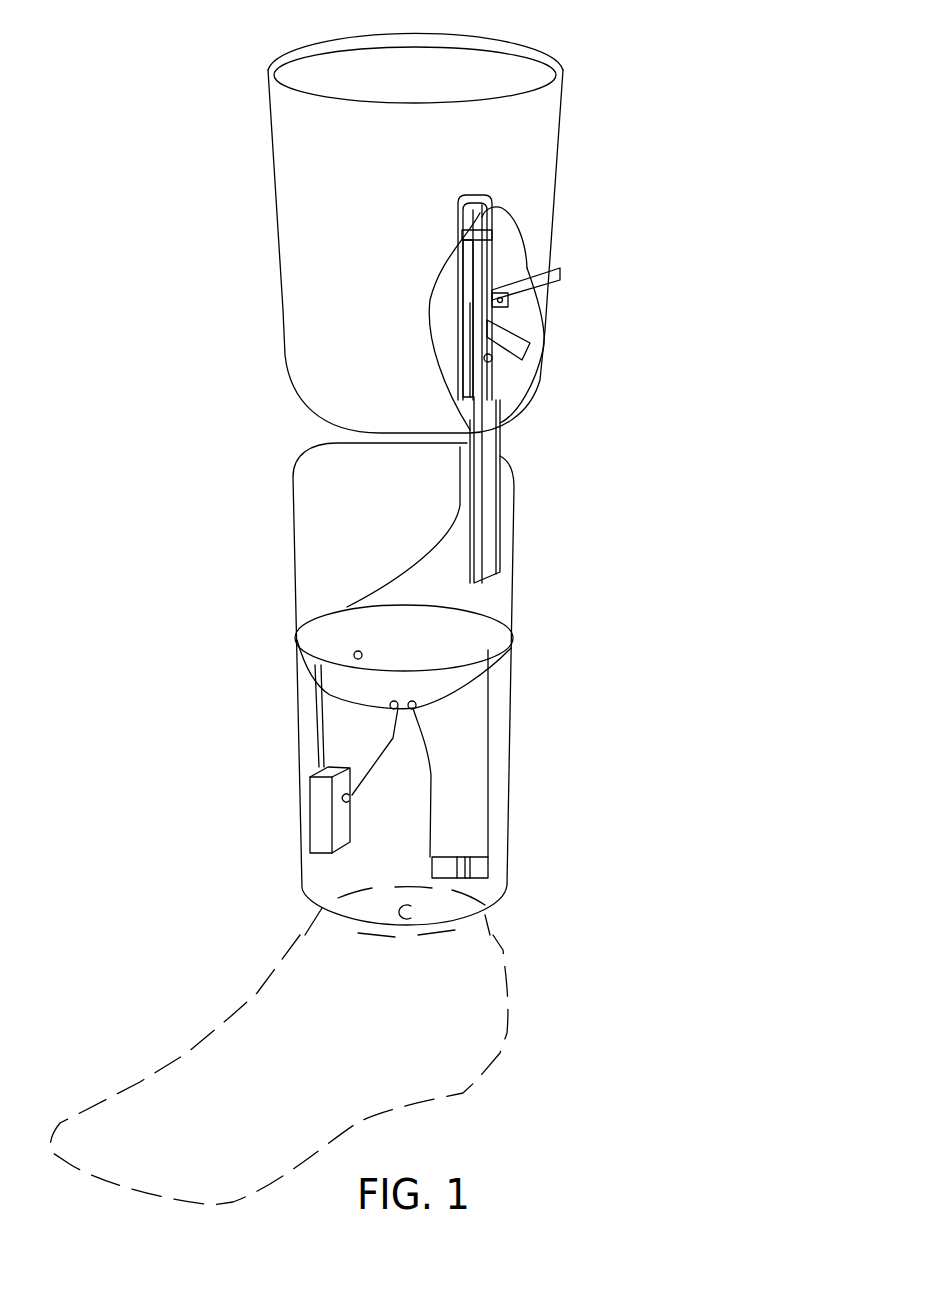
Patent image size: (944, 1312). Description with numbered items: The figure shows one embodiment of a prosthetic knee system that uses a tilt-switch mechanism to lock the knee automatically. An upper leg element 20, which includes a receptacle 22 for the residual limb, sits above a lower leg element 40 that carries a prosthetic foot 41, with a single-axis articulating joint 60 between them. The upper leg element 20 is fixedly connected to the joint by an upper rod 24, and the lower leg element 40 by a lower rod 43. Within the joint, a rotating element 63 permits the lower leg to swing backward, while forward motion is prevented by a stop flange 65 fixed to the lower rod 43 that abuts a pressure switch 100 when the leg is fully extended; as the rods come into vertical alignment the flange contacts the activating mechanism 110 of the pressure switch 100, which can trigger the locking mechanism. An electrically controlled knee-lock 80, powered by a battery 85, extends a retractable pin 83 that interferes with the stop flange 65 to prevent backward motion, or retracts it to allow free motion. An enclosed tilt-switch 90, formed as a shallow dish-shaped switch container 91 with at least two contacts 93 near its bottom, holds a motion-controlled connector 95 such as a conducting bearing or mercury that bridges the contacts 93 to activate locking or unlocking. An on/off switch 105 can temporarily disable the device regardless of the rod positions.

The upper leg element 20 is at (672, 105).
The receptacle 22 is at (442, 50).
The upper rod 24 is at (480, 212).
The knee-lock 80 is at (483, 253).
The pressure switch 100 is at (548, 268).
The activating mechanism 110 is at (508, 300).
The single-axis articulating joint 60 is at (610, 313).
The stop flange 65 is at (528, 322).
The rotating element 63 is at (503, 357).
The retractable pin 83 is at (470, 303).
The lower rod 43 is at (487, 492).
The lower leg element 40 is at (594, 1067).
The tilt-switch 90 is at (513, 605).
The switch container 91 is at (467, 676).
The contacts 93 is at (330, 683).
The motion-controlled connector 95 is at (352, 653).
The battery 85 is at (323, 823).
The on/off switch 105 is at (485, 875).
The prosthetic foot 41 is at (463, 1023).